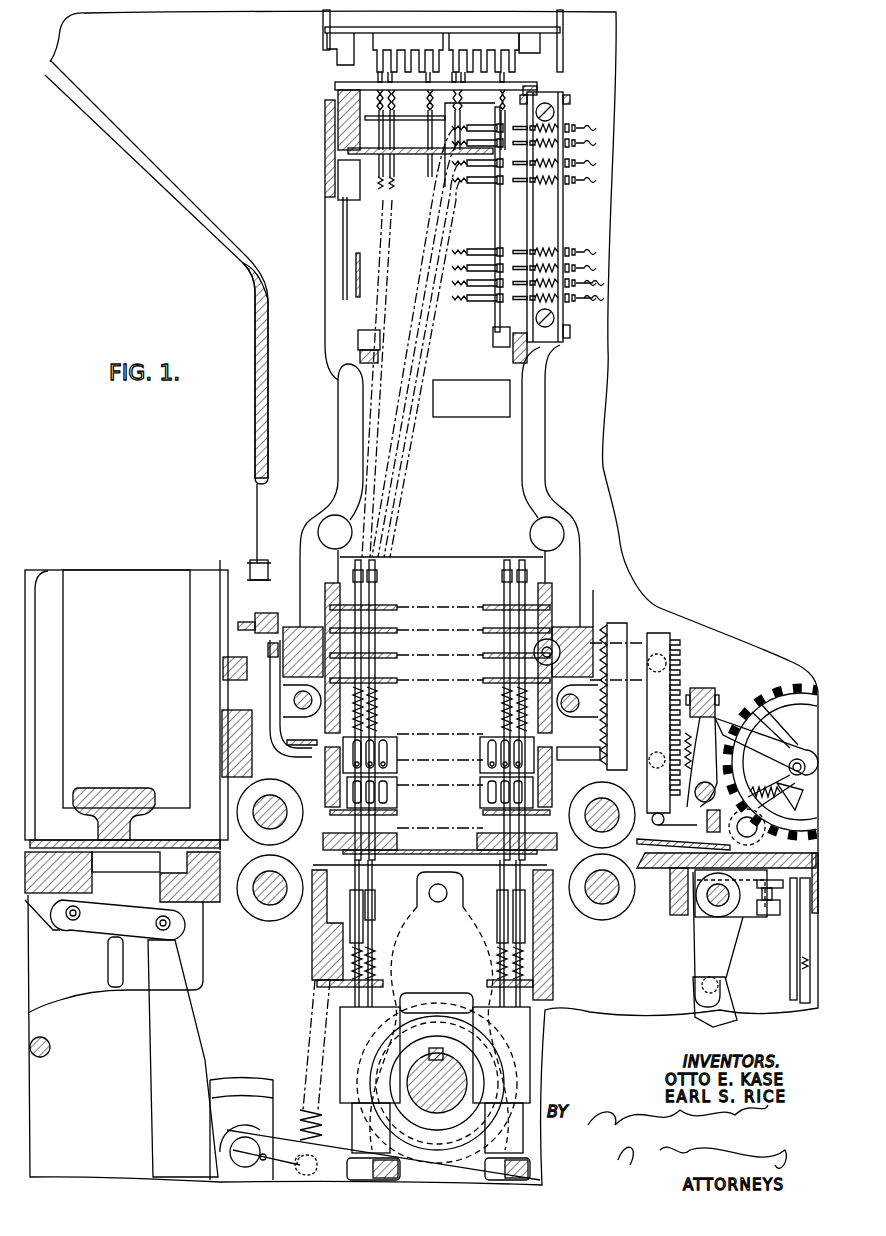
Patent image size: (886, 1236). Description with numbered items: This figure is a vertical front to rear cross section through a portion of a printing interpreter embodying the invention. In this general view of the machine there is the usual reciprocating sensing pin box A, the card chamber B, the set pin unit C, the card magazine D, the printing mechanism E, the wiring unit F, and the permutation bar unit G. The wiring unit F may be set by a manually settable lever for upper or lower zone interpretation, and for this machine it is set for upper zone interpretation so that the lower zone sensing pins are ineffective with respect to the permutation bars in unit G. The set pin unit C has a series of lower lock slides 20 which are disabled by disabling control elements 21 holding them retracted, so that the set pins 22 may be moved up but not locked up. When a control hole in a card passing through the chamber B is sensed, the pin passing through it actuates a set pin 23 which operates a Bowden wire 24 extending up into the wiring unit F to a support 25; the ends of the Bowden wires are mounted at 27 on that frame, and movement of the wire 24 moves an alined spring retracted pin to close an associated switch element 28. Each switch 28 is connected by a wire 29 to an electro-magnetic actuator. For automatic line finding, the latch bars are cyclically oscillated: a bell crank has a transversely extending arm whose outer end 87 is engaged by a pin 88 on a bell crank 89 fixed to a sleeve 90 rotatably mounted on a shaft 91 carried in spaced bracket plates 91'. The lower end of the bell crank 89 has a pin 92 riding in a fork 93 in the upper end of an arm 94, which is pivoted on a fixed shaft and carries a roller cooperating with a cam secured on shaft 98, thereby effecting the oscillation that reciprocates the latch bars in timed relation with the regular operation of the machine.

The lower lock slides 20 is at (488, 789).
The disabling control elements 21 is at (227, 640).
The set pins 22 is at (376, 728).
The set pin 23 is at (371, 703).
The Bowden wire 24 is at (356, 592).
The support 25 is at (542, 220).
The mounting of Bowden wires 27 is at (497, 130).
The switch element 28 is at (575, 125).
The wire 29 is at (608, 286).
The outer end of transversely extending arm 87 is at (776, 921).
The pin 88 is at (770, 937).
The bell crank 89 is at (696, 947).
The sleeve 90 is at (697, 893).
The shaft 91 is at (672, 909).
The bracket plates 91' is at (701, 893).
The pin 92 is at (702, 980).
The fork 93 is at (700, 1000).
The arm 94 is at (700, 1019).
The shaft 98 is at (455, 1070).
The reciprocating sensing pin box A is at (302, 952).
The card chamber B is at (412, 836).
The set pin unit C is at (406, 753).
The card magazine D is at (115, 793).
The printing mechanism E is at (736, 709).
The wiring unit F is at (336, 414).
The permutation bar unit G is at (418, 21).